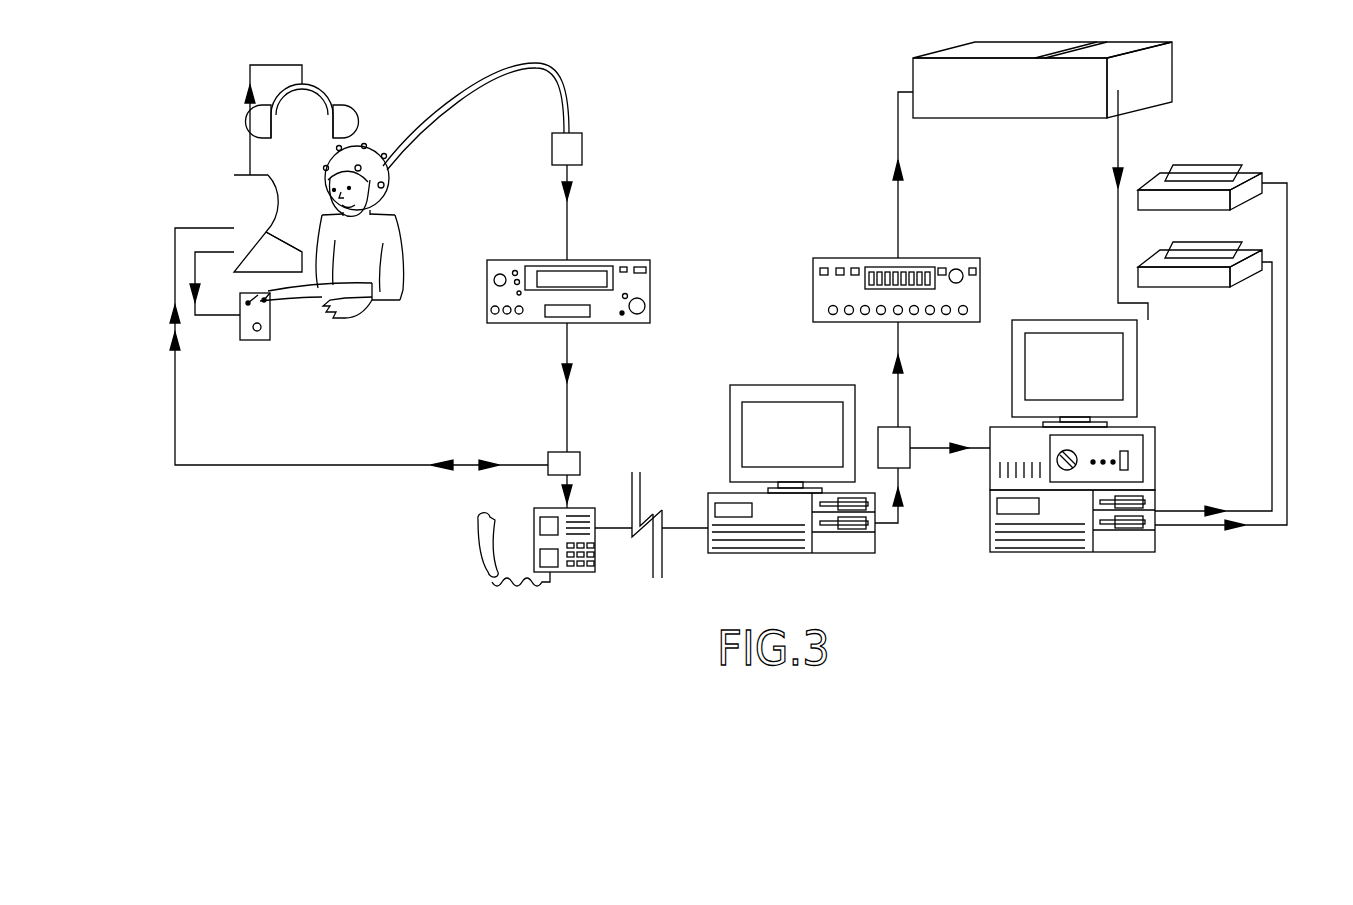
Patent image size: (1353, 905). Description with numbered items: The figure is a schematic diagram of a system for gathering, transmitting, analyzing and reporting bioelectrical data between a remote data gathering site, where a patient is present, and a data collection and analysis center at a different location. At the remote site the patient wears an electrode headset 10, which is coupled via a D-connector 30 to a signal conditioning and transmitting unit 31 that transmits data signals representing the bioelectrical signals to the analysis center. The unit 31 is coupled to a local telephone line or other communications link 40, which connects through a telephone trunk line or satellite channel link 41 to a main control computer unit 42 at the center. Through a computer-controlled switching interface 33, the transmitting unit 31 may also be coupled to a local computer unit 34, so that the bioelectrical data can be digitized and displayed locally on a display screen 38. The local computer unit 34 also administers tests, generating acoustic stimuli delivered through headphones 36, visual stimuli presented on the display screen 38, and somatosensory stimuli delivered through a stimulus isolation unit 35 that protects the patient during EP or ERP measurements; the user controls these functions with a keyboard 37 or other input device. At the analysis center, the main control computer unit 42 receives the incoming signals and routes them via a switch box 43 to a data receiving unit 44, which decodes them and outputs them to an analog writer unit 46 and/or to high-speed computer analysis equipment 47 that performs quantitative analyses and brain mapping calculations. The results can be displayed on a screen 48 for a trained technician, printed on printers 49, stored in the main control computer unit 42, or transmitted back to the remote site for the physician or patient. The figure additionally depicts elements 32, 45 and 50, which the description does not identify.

The electrode headset 10 is at (373, 162).
The D-connector 30 is at (584, 140).
The signal conditioning and transmitting unit 31 is at (635, 260).
The telephone 32 is at (575, 573).
The computer-controlled switching interface 33 is at (582, 462).
The local computer unit 34 is at (234, 215).
The stimulus isolation unit 35 is at (273, 316).
The headphones 36 is at (320, 127).
The keyboard 37 is at (292, 247).
The display screen 38 is at (279, 177).
The local telephone line 40 is at (620, 530).
The telephone trunk line or satellite channel link 41 is at (665, 540).
The main control computer unit 42 is at (798, 553).
The switch box 43 is at (913, 468).
The data receiving unit 44 is at (945, 258).
The computer monitor 45 is at (730, 428).
The analog writer unit 46 is at (1172, 75).
The high-speed computer analysis equipment 47 is at (1100, 553).
The screen 48 is at (1012, 335).
The printers 49 is at (1255, 200).
The control unit 50 is at (1157, 458).